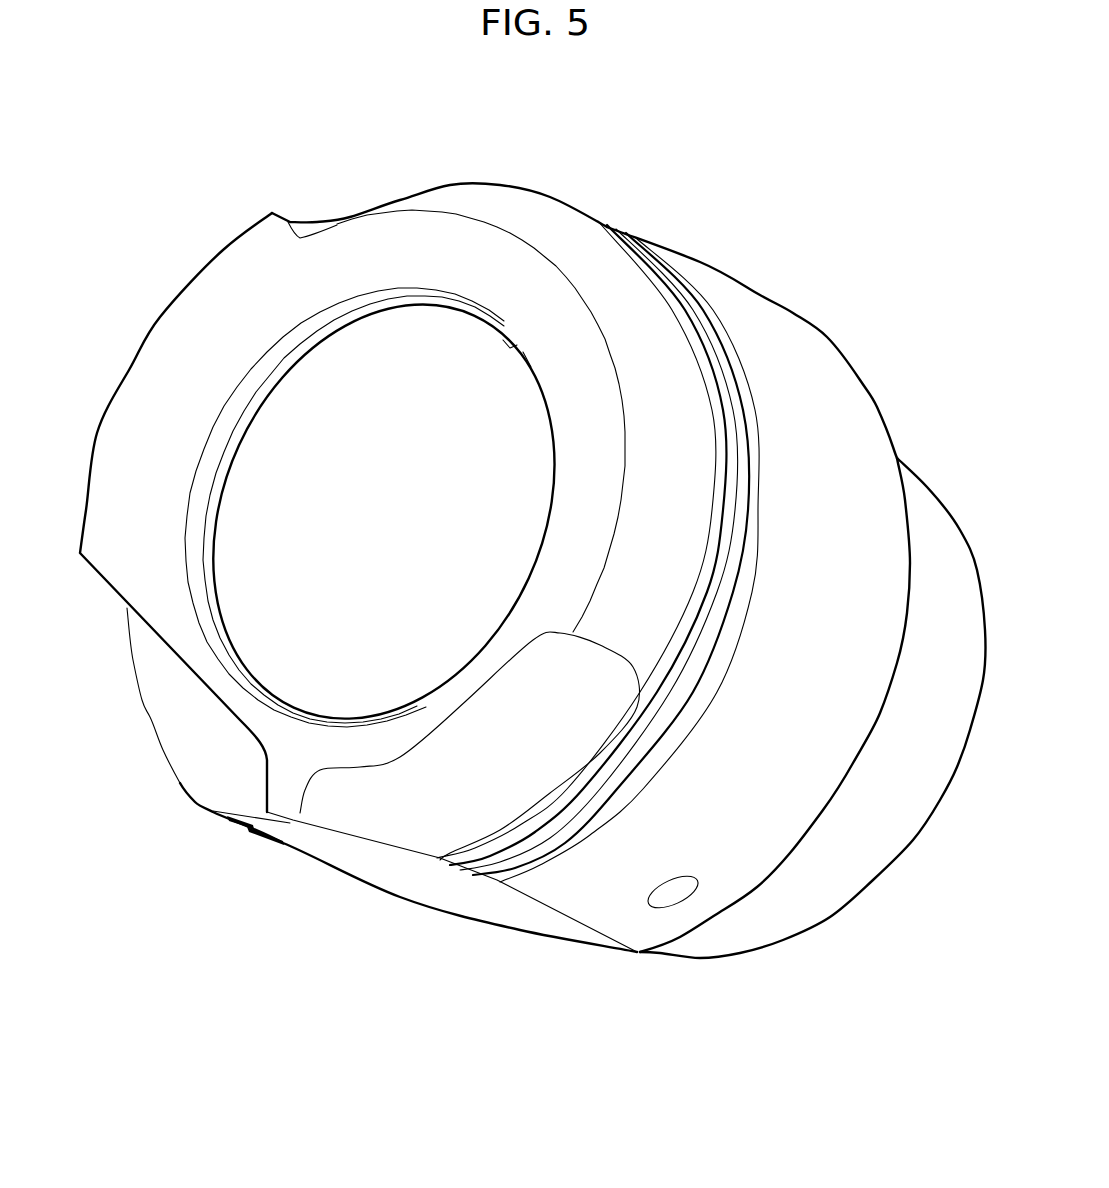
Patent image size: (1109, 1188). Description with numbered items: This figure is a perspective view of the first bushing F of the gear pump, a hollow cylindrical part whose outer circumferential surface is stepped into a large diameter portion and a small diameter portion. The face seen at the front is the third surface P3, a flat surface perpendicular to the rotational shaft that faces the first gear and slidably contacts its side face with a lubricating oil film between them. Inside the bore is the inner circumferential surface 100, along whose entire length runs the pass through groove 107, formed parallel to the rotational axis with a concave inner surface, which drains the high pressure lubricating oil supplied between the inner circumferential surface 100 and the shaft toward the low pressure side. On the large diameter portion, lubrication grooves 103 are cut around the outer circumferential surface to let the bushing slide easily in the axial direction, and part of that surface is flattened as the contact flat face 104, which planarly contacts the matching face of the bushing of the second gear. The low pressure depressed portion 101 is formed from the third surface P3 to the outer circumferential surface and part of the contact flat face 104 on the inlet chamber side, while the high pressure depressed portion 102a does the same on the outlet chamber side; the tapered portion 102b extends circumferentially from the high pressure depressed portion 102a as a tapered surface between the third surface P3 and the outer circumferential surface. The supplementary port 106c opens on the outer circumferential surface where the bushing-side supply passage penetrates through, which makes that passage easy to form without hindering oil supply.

The inner circumferential surface 100 is at (317, 418).
The third surface P3 is at (153, 393).
The low pressure depressed portion 101 is at (207, 765).
The high pressure depressed portion 102a is at (433, 815).
The tapered portion 102b is at (558, 232).
The lubrication grooves 103 is at (750, 410).
The contact flat face 104 is at (497, 907).
The supplementary port 106c is at (673, 890).
The pass through groove 107 is at (513, 333).
The first bushing F is at (680, 215).